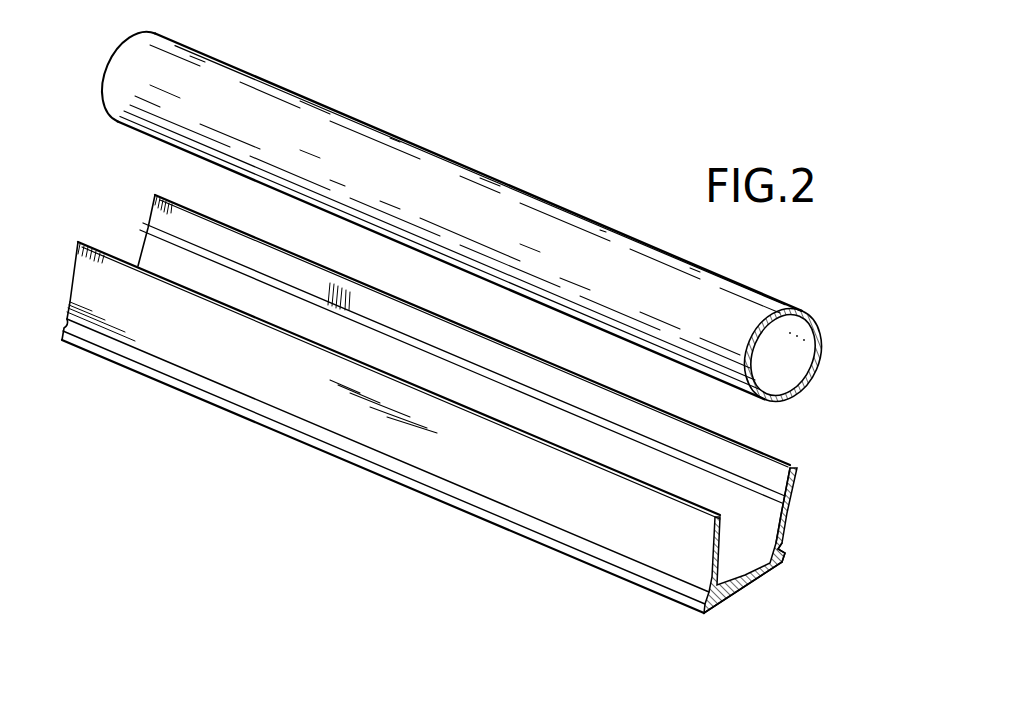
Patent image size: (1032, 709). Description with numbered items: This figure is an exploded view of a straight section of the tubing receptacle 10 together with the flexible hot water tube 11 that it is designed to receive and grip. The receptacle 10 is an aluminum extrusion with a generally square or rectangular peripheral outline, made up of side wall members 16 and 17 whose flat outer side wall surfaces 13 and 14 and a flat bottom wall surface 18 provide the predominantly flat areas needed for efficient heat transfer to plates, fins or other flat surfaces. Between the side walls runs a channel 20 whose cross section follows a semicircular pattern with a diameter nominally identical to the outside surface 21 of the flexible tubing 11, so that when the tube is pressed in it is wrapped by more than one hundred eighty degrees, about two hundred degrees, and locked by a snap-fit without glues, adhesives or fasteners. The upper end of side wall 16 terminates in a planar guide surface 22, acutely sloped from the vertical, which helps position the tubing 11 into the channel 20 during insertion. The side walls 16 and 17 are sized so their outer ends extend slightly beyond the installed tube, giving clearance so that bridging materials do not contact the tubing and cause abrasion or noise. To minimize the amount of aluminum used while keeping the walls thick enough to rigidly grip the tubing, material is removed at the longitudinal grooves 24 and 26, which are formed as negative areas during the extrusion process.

The tubing receptacle 10 is at (232, 437).
The flexible hot water tube 11 is at (372, 114).
The outside surface of the flexible tubing 21 is at (540, 211).
The channel 20 is at (670, 478).
The guide surface 22 is at (787, 463).
The flat side wall surface 13 is at (792, 508).
The side wall member 16 is at (781, 526).
The longitudinal groove 24 is at (792, 553).
The flat side wall surface 14 is at (493, 480).
The longitudinal groove 26 is at (600, 560).
The side wall member 17 is at (700, 578).
The flat bottom wall surface 18 is at (735, 585).